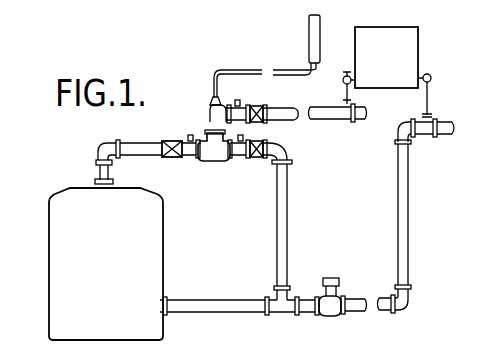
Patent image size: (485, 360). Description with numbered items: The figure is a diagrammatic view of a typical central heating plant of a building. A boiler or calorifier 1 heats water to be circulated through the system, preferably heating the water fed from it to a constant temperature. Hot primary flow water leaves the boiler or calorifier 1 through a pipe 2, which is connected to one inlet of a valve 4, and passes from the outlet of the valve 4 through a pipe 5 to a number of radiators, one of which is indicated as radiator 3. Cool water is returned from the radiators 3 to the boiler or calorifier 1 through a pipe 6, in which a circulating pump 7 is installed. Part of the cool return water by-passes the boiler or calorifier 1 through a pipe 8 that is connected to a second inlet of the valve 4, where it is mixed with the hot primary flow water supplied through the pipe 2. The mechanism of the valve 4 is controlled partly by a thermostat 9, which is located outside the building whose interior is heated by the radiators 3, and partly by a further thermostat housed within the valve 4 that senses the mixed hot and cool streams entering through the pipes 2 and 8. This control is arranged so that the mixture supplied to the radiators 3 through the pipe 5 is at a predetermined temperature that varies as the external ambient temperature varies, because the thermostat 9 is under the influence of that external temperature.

The boiler or calorifier 1 is at (106, 250).
The pipe 2 is at (150, 142).
The radiator 3 is at (393, 72).
The valve 4 is at (212, 162).
The pipe 5 is at (295, 120).
The pipe 6 is at (233, 284).
The circulating pump 7 is at (337, 316).
The pipe 8 is at (288, 263).
The thermostat 9 is at (308, 46).